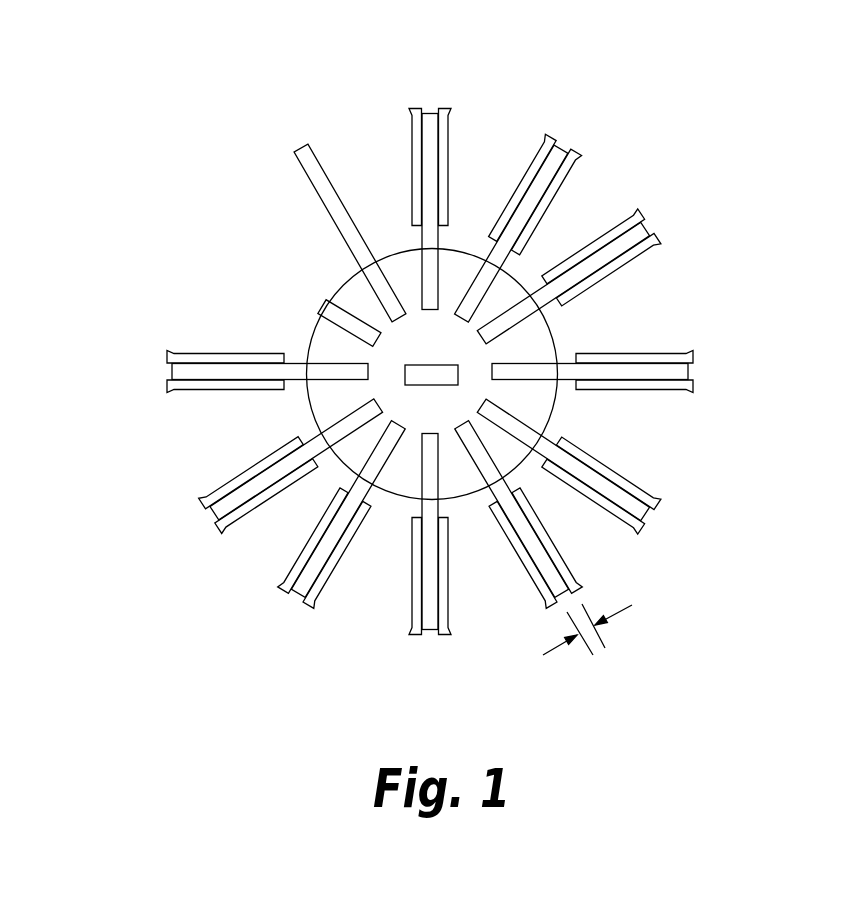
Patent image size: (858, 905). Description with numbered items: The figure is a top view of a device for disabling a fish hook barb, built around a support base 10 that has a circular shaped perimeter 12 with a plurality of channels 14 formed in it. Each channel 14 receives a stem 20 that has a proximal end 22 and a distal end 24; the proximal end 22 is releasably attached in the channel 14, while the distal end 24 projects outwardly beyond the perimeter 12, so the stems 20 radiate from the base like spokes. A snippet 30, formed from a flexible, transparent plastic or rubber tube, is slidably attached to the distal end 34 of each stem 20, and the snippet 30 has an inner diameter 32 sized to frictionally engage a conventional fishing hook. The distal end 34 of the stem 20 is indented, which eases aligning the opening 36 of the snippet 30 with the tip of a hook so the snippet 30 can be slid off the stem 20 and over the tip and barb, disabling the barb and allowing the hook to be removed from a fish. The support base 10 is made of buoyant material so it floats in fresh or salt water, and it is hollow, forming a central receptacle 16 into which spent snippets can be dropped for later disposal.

The support base 10 is at (642, 322).
The circular shaped perimeter 12 is at (558, 415).
The channel 14 is at (312, 302).
The receptacle 16 is at (425, 375).
The stem 20 is at (445, 368).
The proximal end 22 is at (372, 402).
The distal end 24 is at (304, 150).
The snippet 30 is at (557, 200).
The inner diameter 32 is at (538, 548).
The distal end of the stem 34 is at (562, 147).
The opening 36 is at (638, 233).